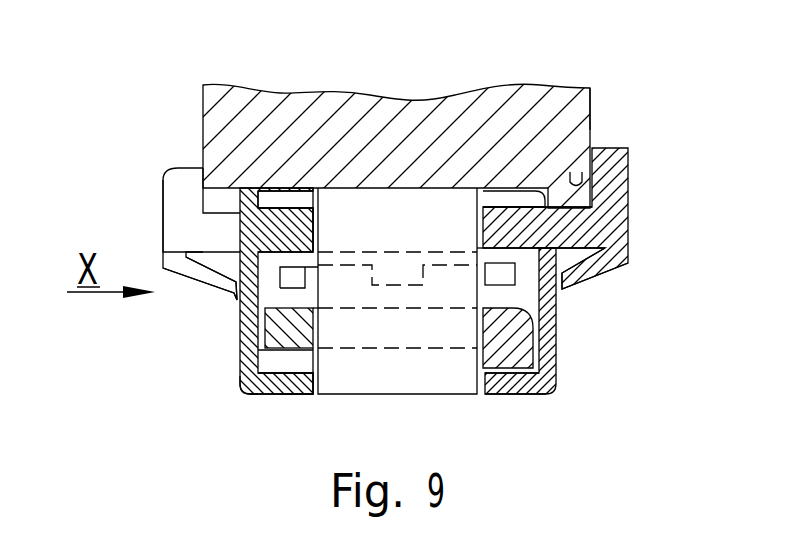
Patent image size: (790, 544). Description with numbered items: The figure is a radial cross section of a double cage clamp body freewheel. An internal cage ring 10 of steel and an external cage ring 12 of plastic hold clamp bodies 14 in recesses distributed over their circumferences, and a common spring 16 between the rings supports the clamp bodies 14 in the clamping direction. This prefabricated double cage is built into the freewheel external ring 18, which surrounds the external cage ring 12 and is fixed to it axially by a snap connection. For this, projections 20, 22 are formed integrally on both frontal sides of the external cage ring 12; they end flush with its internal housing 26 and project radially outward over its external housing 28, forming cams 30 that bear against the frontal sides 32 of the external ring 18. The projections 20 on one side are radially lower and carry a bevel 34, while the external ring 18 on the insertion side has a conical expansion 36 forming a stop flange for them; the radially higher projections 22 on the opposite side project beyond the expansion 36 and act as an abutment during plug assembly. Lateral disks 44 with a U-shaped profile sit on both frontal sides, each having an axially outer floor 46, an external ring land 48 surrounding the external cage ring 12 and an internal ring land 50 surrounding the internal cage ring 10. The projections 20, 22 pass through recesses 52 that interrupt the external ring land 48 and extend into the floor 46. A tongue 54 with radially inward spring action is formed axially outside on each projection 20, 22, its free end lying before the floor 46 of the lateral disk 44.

The internal cage ring 10 is at (262, 352).
The external cage ring 12 is at (270, 270).
The clamp bodies 14 is at (430, 378).
The spring 16 is at (262, 322).
The freewheel external ring 18 is at (371, 115).
The projections 20 is at (200, 235).
The projections 22 is at (580, 232).
The internal housing 26 is at (548, 292).
The external housing 28 is at (259, 190).
The cams 30 is at (630, 149).
The frontal sides 32 is at (593, 110).
The bevel 34 is at (176, 171).
The conical expansion 36 is at (578, 182).
The lateral disks 44 is at (258, 395).
The floor 46 is at (238, 375).
The external ring land 48 is at (270, 206).
The internal ring land 50 is at (292, 395).
The recesses 52 is at (504, 194).
The tongue 54 is at (565, 286).